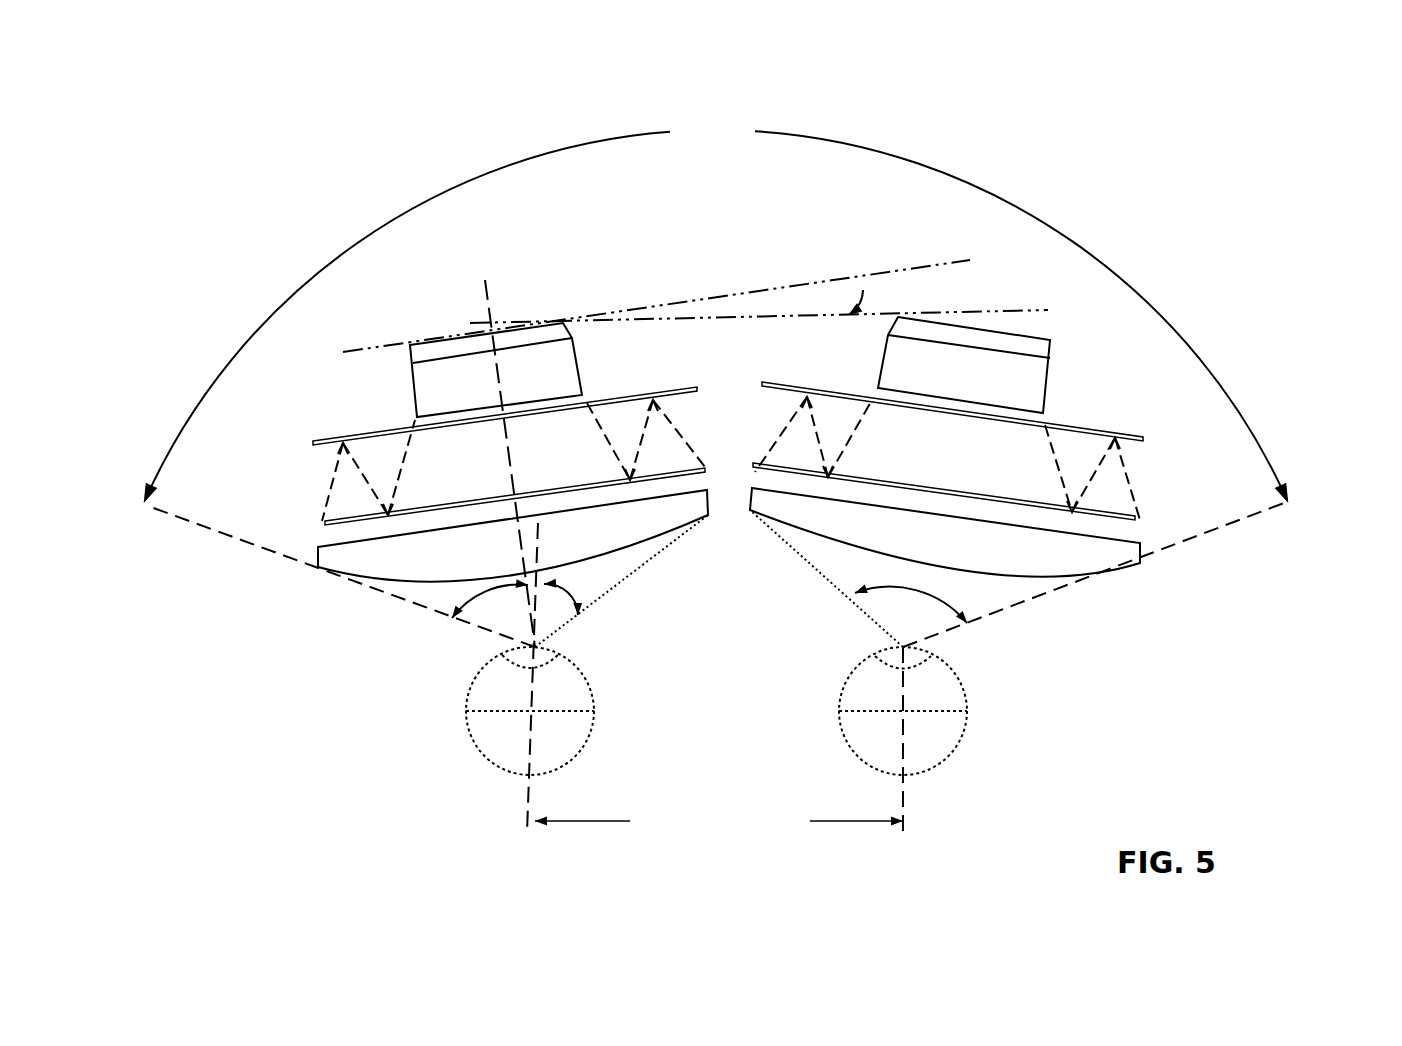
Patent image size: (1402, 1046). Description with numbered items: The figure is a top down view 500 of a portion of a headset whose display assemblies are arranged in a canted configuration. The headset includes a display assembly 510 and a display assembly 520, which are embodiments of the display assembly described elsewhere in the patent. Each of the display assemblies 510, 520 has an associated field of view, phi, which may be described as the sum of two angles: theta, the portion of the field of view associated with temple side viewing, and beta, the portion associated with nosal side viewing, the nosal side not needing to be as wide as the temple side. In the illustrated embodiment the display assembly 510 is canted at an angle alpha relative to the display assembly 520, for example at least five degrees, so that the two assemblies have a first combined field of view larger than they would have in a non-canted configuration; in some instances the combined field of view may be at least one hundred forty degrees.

The top down view 500 is at (170, 74).
The display assembly 510 is at (1065, 338).
The display assembly 520 is at (350, 343).